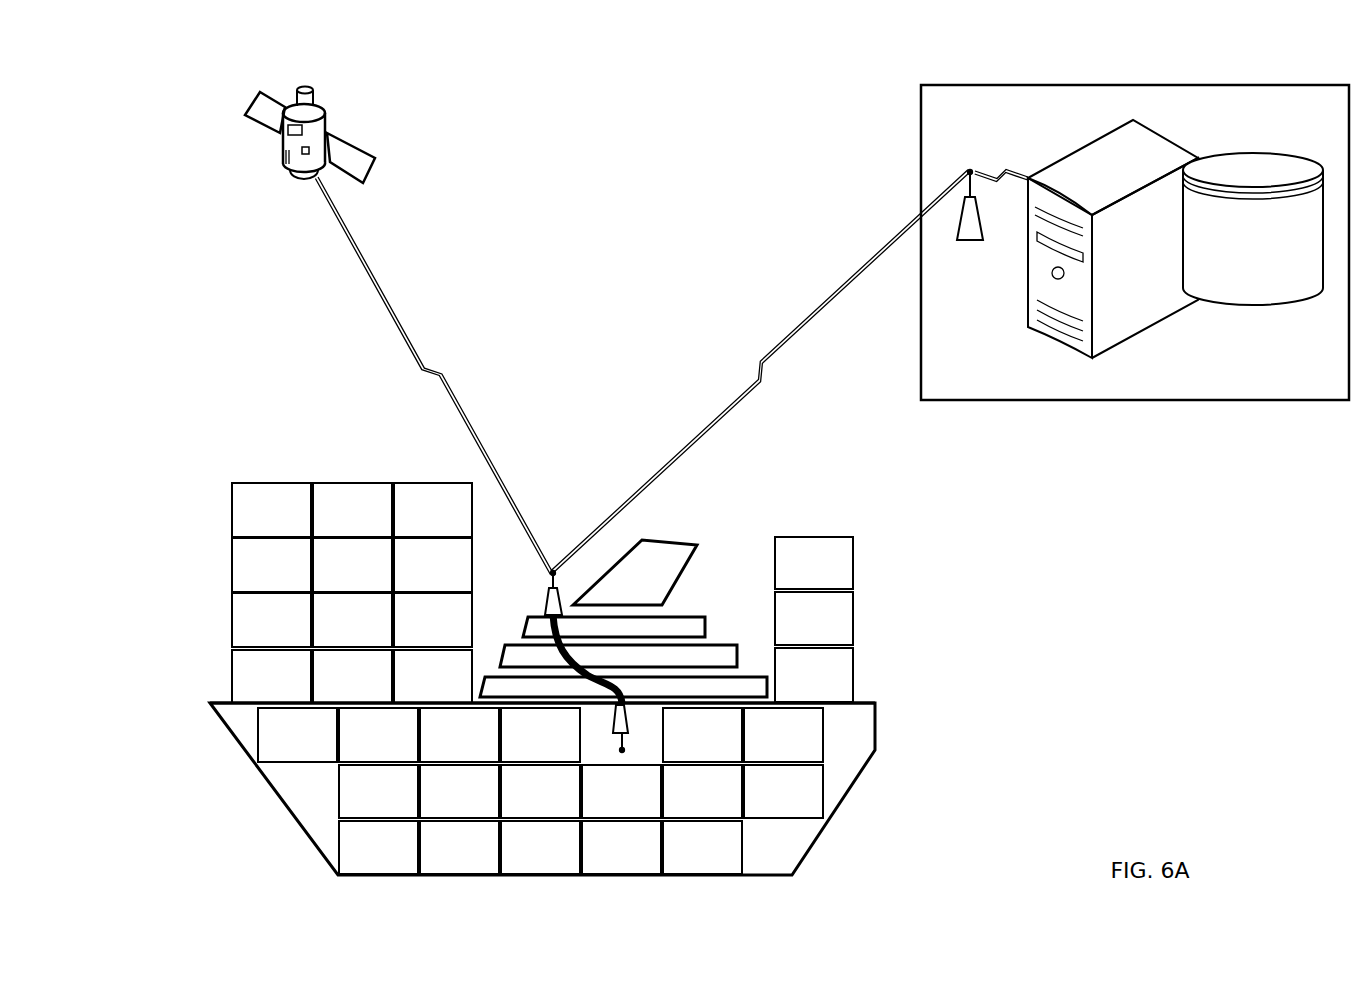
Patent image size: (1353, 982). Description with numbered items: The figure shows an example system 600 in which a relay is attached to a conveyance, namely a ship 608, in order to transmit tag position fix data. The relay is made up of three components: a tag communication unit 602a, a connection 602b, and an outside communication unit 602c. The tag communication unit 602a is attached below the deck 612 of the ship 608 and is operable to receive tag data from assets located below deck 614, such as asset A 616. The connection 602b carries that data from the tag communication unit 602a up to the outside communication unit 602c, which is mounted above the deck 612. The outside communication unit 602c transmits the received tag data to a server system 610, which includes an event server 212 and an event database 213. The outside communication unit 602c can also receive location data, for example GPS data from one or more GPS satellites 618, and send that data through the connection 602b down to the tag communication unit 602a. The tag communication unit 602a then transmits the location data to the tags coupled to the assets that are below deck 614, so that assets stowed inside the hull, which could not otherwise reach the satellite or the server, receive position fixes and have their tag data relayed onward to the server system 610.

The system 600 is at (221, 316).
The GPS satellite 618 is at (330, 115).
The server system 610 is at (1135, 242).
The event server 212 is at (1113, 239).
The event database 213 is at (1253, 229).
The conveyance 608 is at (189, 694).
The deck 612 is at (875, 703).
The below deck 614 is at (882, 705).
The tag communication unit 602a is at (623, 713).
The connection 602b is at (546, 640).
The outside communication unit 602c is at (549, 582).
The asset A 616 is at (561, 783).